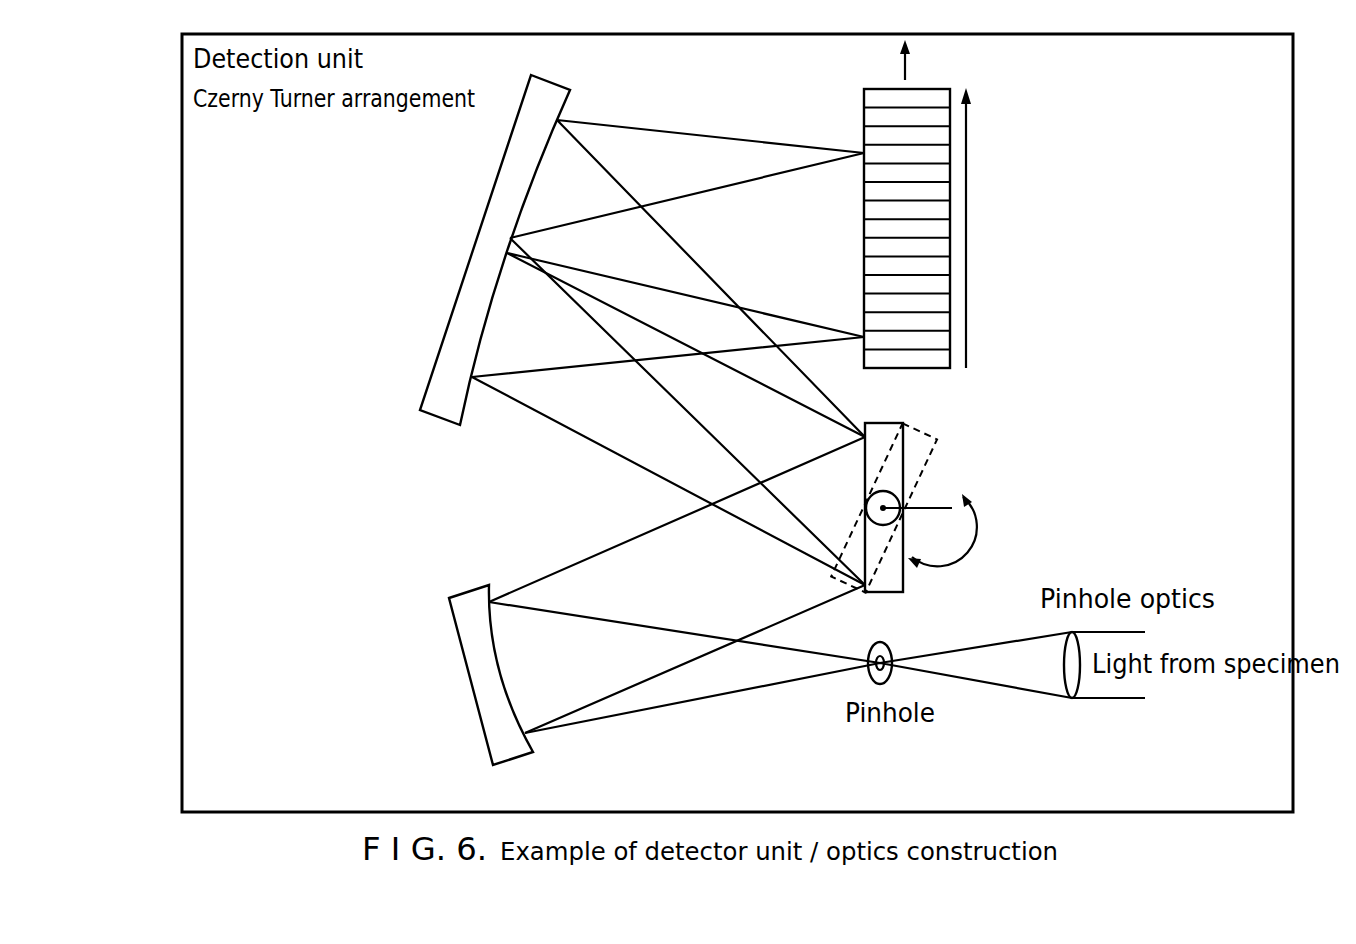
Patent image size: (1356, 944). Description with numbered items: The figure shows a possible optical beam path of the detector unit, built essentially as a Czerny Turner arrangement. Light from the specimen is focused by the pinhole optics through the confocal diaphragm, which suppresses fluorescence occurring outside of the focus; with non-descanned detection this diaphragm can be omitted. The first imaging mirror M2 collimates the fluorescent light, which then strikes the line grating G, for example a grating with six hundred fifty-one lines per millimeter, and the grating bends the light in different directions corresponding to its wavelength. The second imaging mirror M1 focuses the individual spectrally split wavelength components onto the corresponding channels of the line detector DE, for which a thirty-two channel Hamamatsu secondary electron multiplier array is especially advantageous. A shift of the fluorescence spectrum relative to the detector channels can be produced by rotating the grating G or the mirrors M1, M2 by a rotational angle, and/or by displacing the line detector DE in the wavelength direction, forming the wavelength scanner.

The second imaging mirror M1 is at (489, 250).
The first imaging mirror M2 is at (476, 675).
The line grating G is at (989, 501).
The line detector DE is at (1046, 204).